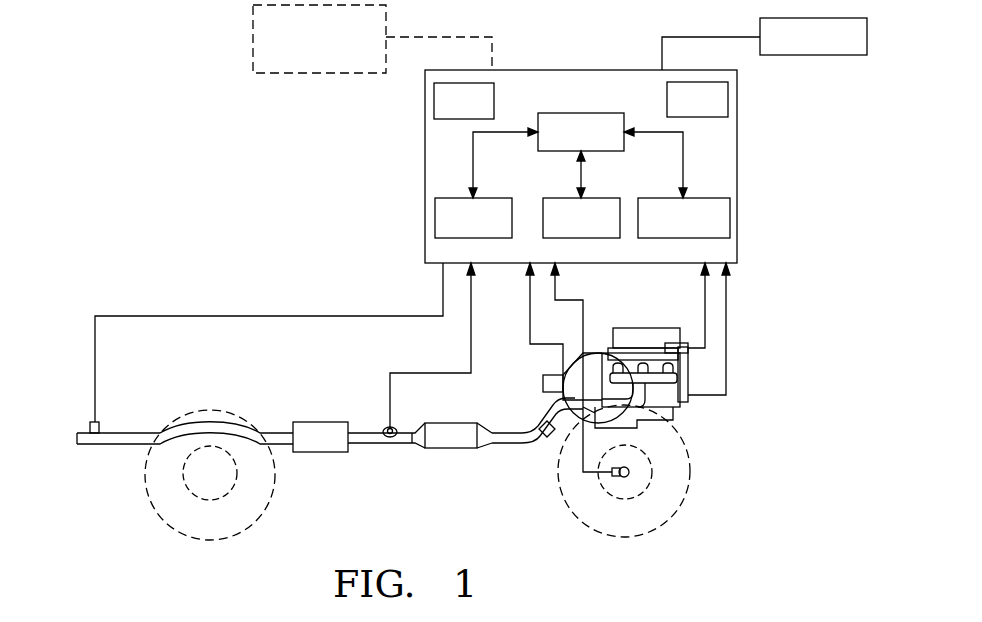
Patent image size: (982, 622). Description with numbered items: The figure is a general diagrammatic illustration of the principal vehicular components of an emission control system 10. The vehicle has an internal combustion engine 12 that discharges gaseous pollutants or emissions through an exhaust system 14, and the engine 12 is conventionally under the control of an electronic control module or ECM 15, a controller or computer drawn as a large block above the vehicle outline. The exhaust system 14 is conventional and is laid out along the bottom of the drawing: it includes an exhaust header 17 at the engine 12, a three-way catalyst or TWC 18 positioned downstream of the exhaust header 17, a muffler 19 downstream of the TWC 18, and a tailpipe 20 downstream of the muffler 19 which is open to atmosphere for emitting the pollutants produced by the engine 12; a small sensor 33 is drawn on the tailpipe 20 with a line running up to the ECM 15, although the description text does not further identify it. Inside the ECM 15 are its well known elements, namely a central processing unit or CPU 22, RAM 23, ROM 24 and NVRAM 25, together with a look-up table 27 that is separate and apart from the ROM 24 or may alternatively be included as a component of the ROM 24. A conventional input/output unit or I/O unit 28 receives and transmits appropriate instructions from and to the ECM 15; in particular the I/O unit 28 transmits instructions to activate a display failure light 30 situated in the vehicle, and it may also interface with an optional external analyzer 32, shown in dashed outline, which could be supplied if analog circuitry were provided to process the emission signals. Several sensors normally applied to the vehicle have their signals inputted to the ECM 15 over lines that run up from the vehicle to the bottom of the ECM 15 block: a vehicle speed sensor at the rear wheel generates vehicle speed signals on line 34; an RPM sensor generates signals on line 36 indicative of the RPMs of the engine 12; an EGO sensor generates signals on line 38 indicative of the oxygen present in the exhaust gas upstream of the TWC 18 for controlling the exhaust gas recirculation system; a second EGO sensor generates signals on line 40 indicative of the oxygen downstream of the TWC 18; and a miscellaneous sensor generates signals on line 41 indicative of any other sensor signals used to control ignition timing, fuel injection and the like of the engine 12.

The vehicular emission control system 10 is at (812, 163).
The internal combustion engine 12 is at (656, 384).
The exhaust system 14 is at (330, 459).
The electronic control module (ECM) 15 is at (737, 163).
The exhaust header 17 is at (676, 378).
The three-way catalyst (TWC) 18 is at (450, 448).
The muffler 19 is at (320, 452).
The tailpipe 20 is at (115, 444).
The central processing unit (CPU) 22 is at (605, 151).
The RAM 23 is at (474, 238).
The ROM 24 is at (583, 238).
The NVRAM 25 is at (685, 238).
The look-up table 27 is at (434, 107).
The input/output (I/O) unit 28 is at (697, 117).
The display failure light 30 is at (813, 55).
The external analyzer 32 is at (336, 73).
The tailpipe sensor 33 is at (100, 429).
The vehicle speed sensor line 34 is at (592, 450).
The RPM sensor line 36 is at (726, 328).
The upstream EGO sensor line 38 is at (555, 440).
The downstream EGO sensor line 40 is at (388, 403).
The miscellaneous sensor line 41 is at (705, 303).